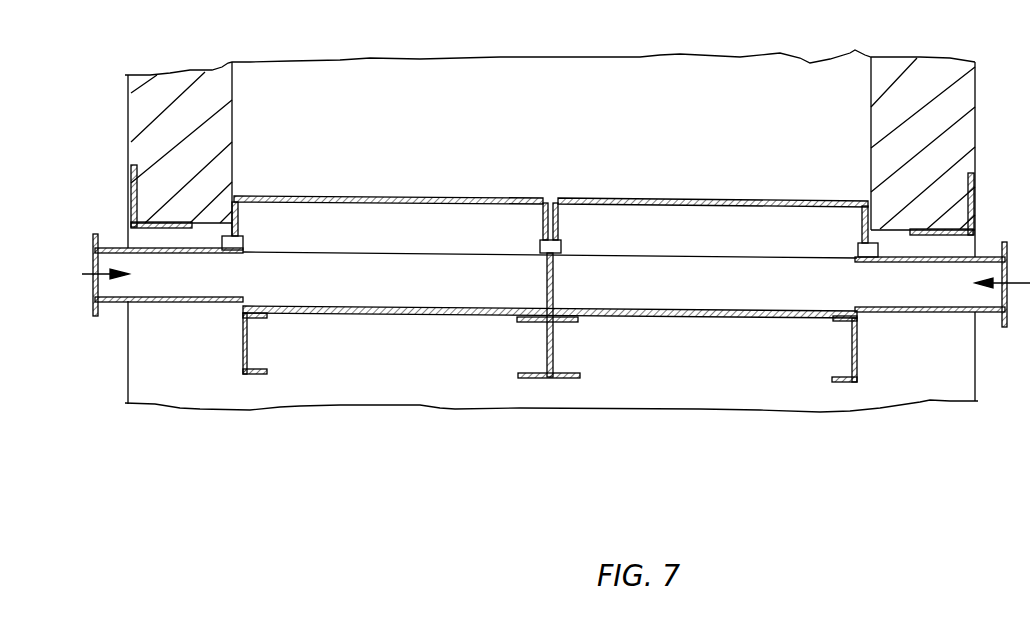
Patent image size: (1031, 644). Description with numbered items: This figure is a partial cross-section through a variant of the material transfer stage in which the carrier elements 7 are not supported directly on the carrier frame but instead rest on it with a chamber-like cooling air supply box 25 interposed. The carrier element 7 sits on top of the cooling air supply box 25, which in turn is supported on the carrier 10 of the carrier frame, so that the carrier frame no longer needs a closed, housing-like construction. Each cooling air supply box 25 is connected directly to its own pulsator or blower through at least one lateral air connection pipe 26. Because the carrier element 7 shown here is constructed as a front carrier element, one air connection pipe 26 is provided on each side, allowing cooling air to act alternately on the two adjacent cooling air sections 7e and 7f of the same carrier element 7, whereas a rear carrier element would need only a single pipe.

The carrier element 7 is at (560, 197).
The cooling air section 7e is at (390, 222).
The cooling air section 7f is at (706, 228).
The carrier 10 is at (857, 362).
The cooling air supply box 25 is at (373, 314).
The lateral air connection pipe 26 is at (185, 290).